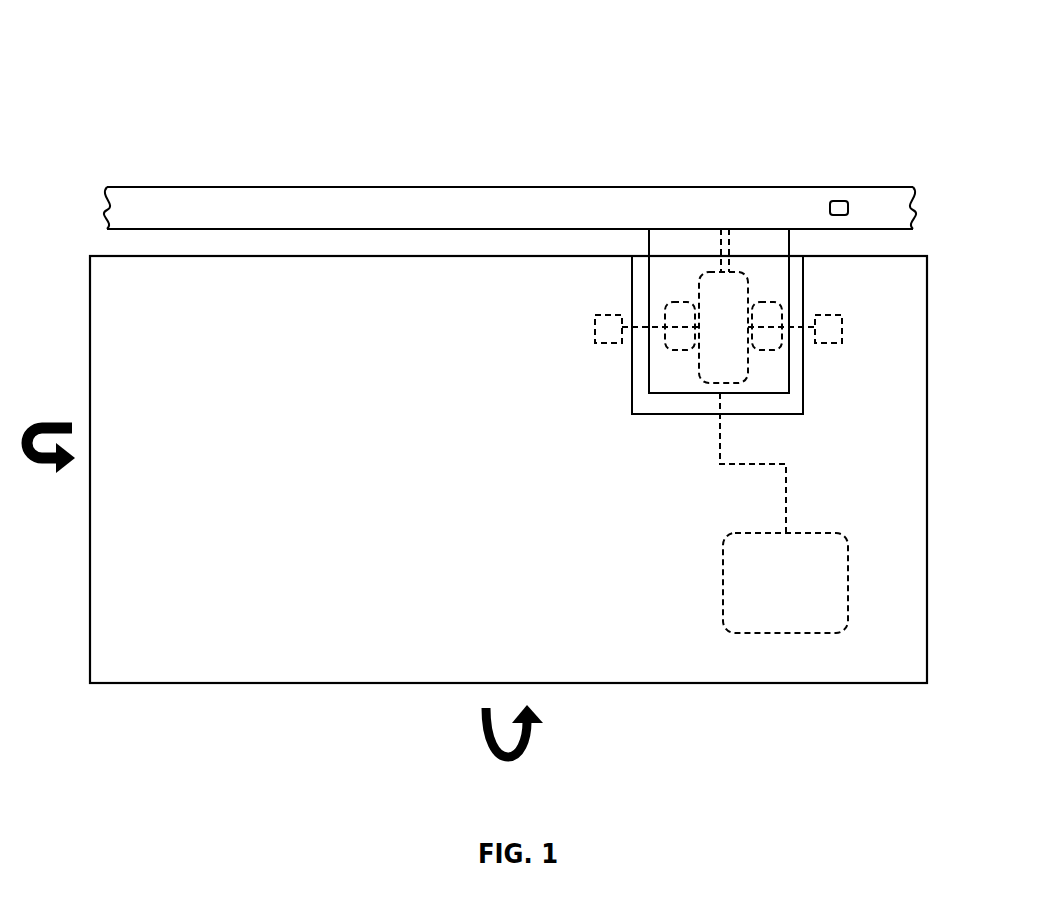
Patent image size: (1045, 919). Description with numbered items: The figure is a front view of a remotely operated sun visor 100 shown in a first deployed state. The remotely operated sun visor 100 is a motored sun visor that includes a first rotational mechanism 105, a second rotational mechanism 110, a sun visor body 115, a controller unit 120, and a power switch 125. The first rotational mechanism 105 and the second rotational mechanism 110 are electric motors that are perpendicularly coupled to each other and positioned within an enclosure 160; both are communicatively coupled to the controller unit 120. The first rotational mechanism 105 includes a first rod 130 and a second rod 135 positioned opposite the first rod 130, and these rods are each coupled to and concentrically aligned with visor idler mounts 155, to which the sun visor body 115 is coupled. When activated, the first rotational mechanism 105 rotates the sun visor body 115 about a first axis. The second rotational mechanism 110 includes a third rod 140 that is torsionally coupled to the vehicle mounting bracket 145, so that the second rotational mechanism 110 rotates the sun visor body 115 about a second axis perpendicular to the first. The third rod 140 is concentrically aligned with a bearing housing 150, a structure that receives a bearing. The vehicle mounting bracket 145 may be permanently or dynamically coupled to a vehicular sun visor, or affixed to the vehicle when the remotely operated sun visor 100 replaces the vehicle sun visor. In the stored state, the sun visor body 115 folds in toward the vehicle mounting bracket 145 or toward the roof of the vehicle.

The remotely operated sun visor 100 is at (240, 98).
The first rotational mechanism 105 is at (720, 339).
The second rotational mechanism 110 is at (742, 336).
The sun visor body 115 is at (425, 487).
The controller unit 120 is at (806, 594).
The power switch 125 is at (839, 200).
The first rod 130 is at (806, 325).
The second rod 135 is at (642, 325).
The third rod 140 is at (729, 240).
The vehicle mounting bracket 145 is at (537, 216).
The bearing housing 150 is at (789, 252).
The visor idler mounts 155 is at (592, 329).
The enclosure 160 is at (649, 370).